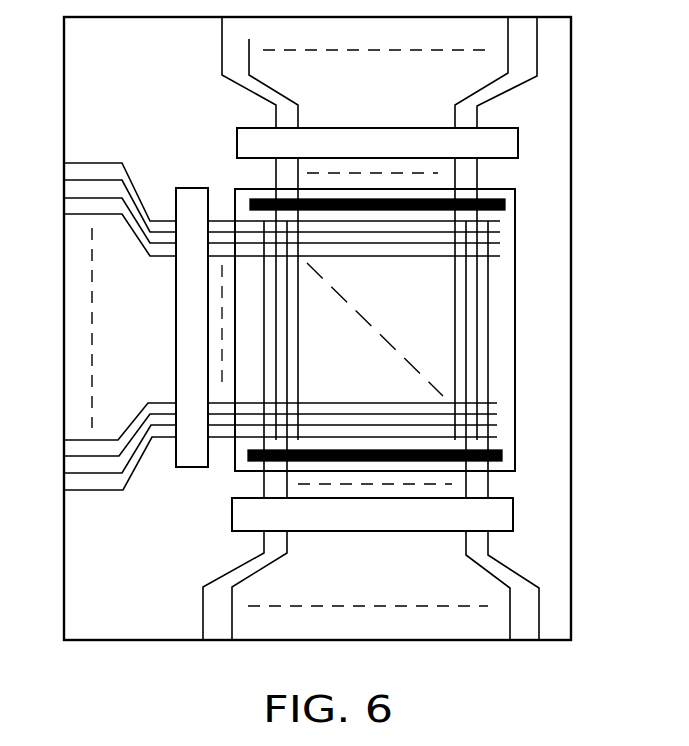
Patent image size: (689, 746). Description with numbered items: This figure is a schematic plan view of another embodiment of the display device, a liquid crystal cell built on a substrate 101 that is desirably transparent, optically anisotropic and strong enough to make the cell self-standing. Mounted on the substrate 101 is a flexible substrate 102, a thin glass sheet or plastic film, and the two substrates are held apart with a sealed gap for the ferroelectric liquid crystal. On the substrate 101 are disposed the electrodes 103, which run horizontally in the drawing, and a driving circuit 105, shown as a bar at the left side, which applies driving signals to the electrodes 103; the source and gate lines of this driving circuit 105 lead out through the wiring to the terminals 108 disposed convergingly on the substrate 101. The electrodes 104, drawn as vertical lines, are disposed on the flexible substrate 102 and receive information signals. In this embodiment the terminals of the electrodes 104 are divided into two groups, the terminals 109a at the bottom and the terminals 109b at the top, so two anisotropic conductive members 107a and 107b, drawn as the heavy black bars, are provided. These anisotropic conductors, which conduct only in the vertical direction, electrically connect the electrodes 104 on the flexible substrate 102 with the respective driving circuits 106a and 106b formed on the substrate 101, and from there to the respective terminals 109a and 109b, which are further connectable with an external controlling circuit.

The substrate 101 is at (571, 408).
The flexible substrate 102 is at (516, 305).
The electrodes 103 is at (500, 243).
The electrodes 104 is at (493, 348).
The driving circuit 105 is at (188, 467).
The driving circuit 106a is at (513, 515).
The driving circuit 106b is at (518, 142).
The anisotropic conductive member 107a is at (502, 455).
The anisotropic conductive member 107b is at (505, 206).
The terminals 108 is at (85, 497).
The terminals 109a is at (545, 607).
The terminals 109b is at (541, 53).